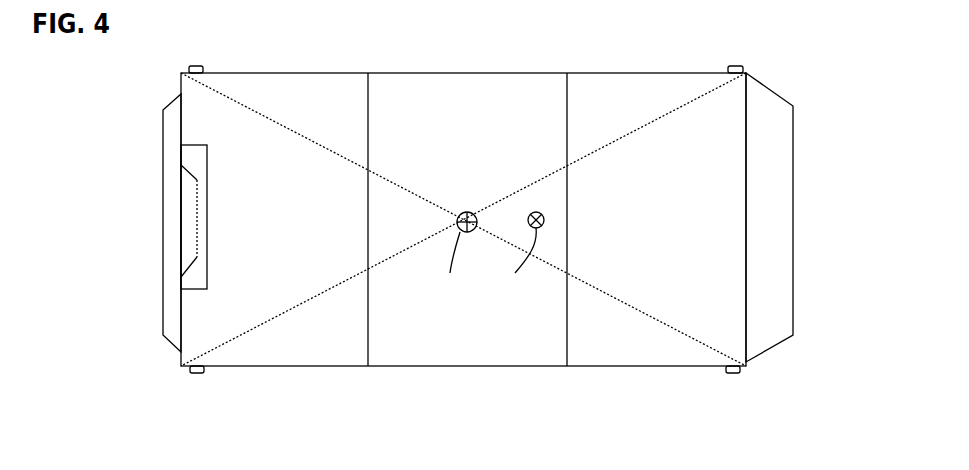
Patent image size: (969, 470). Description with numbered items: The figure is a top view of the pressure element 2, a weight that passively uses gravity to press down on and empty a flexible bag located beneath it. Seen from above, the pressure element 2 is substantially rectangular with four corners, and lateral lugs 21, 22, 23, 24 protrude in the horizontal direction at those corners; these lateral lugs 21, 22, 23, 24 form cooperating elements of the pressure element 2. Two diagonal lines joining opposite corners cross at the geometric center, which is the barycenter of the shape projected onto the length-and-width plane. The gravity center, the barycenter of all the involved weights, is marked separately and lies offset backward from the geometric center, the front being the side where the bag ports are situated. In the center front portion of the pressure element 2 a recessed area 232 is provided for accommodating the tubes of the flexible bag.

The pressure element 2 is at (812, 205).
The lateral lug 21 is at (197, 374).
The lateral lug 22 is at (733, 375).
The lateral lug 23 is at (197, 64).
The lateral lug 24 is at (735, 65).
The recessed area 232 is at (188, 212).